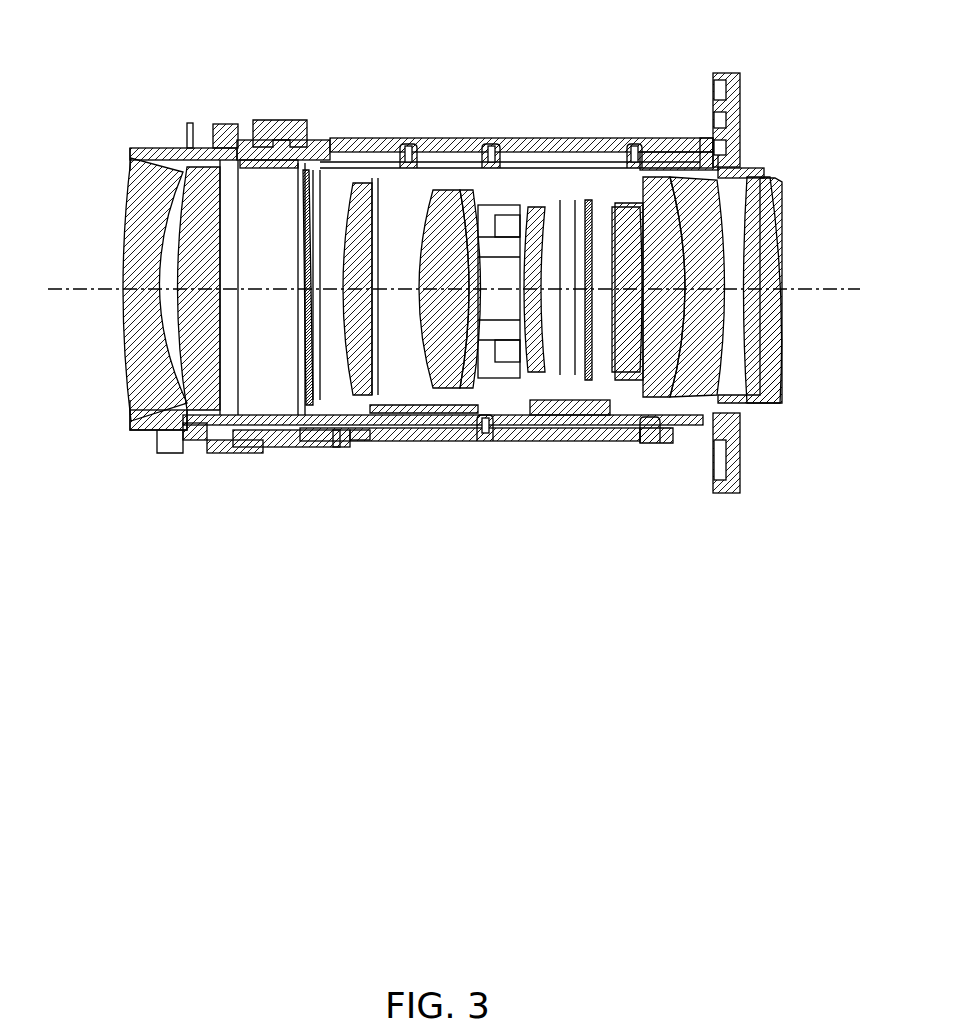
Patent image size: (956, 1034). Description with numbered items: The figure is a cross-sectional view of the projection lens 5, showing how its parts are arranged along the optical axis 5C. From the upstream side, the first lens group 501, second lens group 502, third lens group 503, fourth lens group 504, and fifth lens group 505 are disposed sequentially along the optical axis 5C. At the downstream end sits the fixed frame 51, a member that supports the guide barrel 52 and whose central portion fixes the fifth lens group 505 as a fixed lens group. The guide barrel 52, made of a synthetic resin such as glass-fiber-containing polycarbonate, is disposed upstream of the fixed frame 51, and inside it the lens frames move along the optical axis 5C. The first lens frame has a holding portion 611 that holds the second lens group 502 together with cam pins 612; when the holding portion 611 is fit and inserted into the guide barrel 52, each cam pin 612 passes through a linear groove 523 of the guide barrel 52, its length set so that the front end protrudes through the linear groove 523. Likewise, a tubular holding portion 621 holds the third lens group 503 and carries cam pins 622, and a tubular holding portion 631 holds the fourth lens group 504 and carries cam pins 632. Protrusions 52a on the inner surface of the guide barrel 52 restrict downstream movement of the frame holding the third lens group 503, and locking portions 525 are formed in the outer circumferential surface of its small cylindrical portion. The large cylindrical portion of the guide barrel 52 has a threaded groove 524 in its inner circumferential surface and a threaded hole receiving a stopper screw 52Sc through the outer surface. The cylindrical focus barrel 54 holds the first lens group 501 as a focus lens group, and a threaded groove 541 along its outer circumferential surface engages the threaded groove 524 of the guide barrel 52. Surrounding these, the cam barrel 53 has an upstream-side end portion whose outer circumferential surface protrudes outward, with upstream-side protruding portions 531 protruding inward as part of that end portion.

The projection lens 5 is at (590, 60).
The optical axis 5C is at (65, 289).
The fixed frame 51 is at (723, 493).
The guide barrel 52 is at (279, 457).
The protrusions 52a is at (543, 410).
The stopper screw 52Sc is at (224, 124).
The cam barrel 53 is at (402, 443).
The focus barrel 54 is at (246, 457).
The first lens group 501 is at (108, 240).
The second lens group 502 is at (322, 270).
The third lens group 503 is at (405, 270).
The fourth lens group 504 is at (596, 272).
The fifth lens group 505 is at (790, 240).
The linear groove 523 is at (563, 162).
The threaded groove 524 is at (270, 160).
The locking portions 525 is at (350, 437).
The upstream-side protruding portions 531 is at (340, 437).
The threaded groove 541 is at (290, 120).
The holding portion 611 is at (404, 407).
The cam pins 612 is at (418, 138).
The tubular holding portion 621 is at (482, 441).
The cam pins 622 is at (498, 138).
The tubular holding portion 631 is at (643, 443).
The cam pins 632 is at (640, 138).